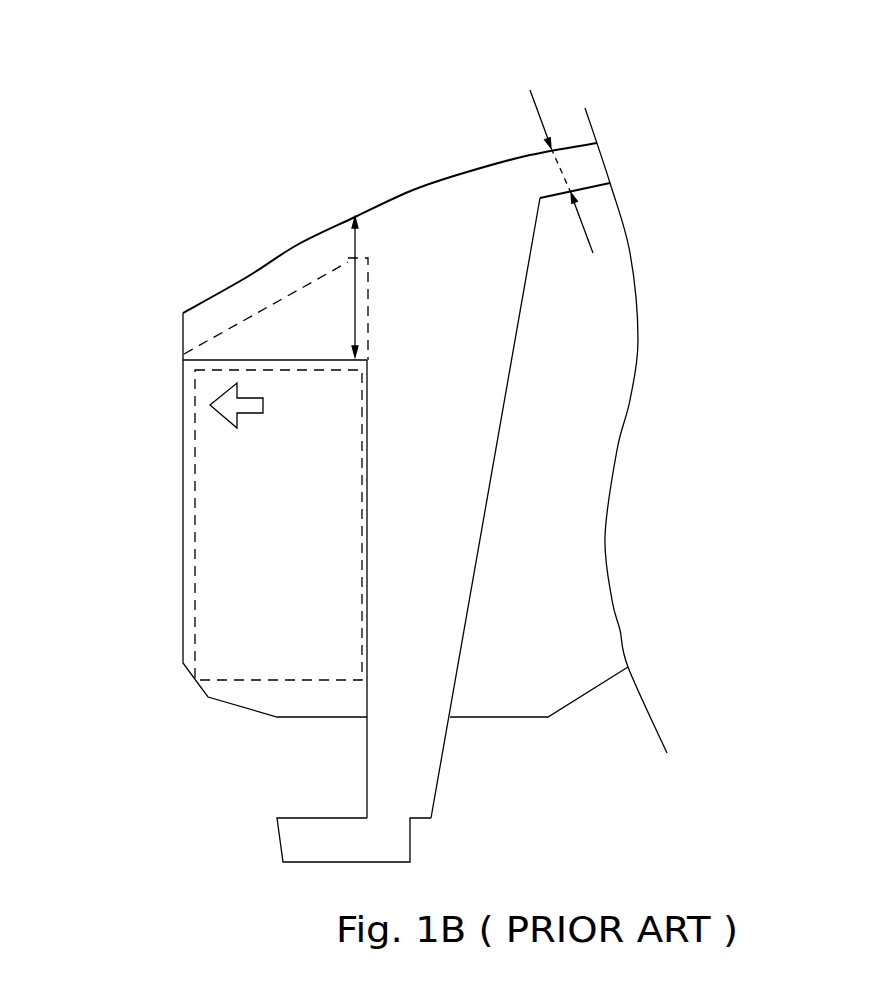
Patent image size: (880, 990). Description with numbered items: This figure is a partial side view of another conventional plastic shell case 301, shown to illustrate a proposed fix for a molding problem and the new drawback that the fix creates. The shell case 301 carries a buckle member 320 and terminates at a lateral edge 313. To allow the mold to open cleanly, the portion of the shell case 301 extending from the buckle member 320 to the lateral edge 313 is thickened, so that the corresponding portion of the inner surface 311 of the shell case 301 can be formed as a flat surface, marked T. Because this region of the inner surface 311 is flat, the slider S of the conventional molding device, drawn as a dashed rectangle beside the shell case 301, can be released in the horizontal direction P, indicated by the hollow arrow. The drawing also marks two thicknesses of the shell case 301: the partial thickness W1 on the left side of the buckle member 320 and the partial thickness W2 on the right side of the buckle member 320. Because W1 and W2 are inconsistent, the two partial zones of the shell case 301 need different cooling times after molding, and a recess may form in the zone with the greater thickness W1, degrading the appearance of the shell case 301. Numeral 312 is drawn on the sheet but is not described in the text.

The plastic shell case 301 is at (71, 37).
The inner surface 311 is at (553, 198).
The top surface portion 312 is at (465, 172).
The lateral edge 313 is at (183, 333).
The buckle member 320 is at (440, 455).
The slider S is at (237, 533).
The horizontal direction P is at (236, 422).
The flat surface T is at (295, 357).
The partial thickness W1 is at (357, 243).
The partial thickness W2 is at (563, 173).